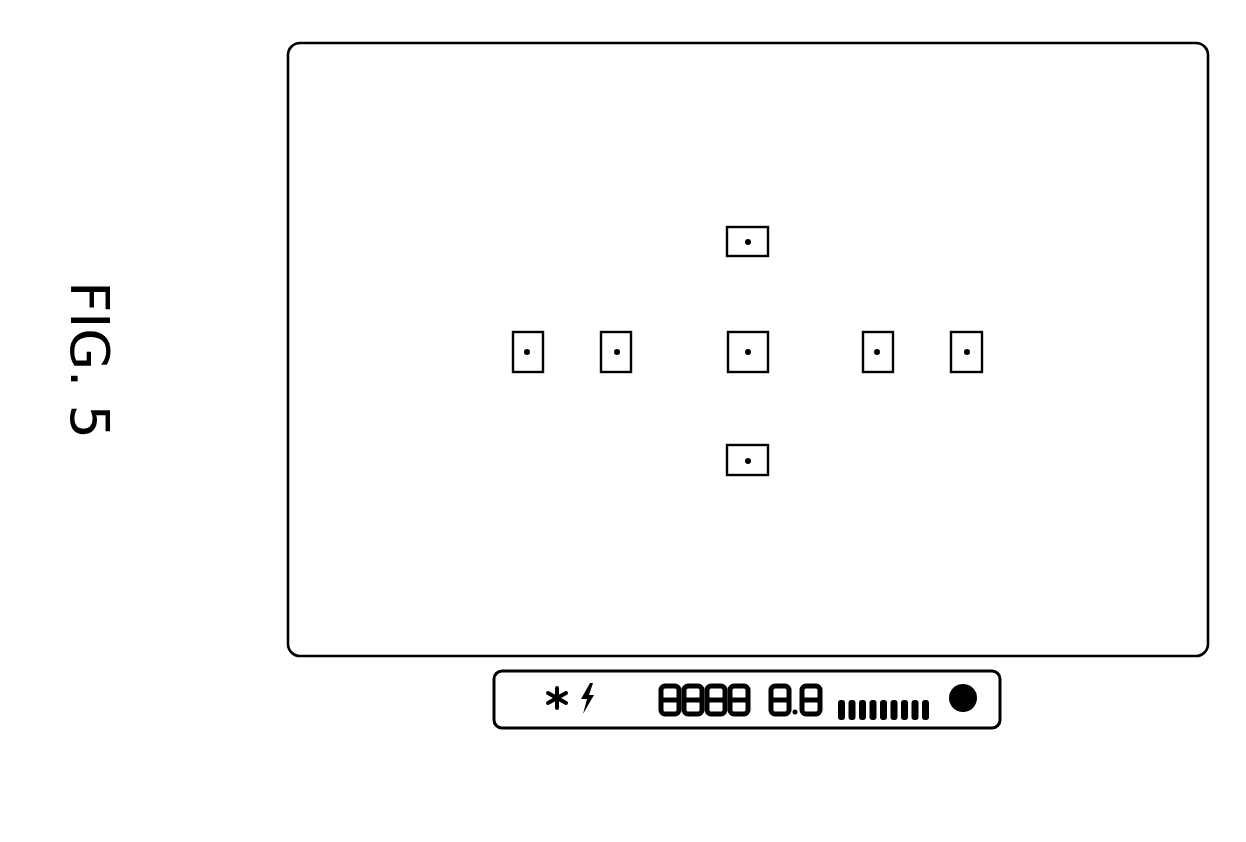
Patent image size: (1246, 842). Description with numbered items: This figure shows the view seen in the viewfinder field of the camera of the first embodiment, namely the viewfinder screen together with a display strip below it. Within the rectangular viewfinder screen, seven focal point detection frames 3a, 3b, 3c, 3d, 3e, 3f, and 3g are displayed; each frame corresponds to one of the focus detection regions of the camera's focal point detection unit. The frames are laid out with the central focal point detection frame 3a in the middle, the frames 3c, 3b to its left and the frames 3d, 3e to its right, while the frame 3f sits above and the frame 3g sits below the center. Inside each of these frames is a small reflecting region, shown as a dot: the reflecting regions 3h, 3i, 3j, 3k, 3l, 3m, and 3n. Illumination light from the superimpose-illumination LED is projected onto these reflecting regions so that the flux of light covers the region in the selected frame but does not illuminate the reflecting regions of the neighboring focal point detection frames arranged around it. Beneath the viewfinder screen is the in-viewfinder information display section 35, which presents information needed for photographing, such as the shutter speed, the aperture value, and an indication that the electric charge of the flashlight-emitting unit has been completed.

The focal point detection frame 3a is at (768, 350).
The focal point detection frame 3b is at (618, 332).
The focal point detection frame 3c is at (530, 332).
The focal point detection frame 3d is at (890, 332).
The focal point detection frame 3e is at (982, 345).
The focal point detection frame 3f is at (768, 238).
The focal point detection frame 3g is at (768, 458).
The reflecting region 3h is at (748, 352).
The reflecting region 3i is at (877, 352).
The reflecting region 3j is at (967, 352).
The reflecting region 3k is at (617, 352).
The reflecting region 3l is at (527, 352).
The reflecting region 3m is at (748, 242).
The reflecting region 3n is at (748, 461).
The in-viewfinder information display section 35 is at (780, 729).